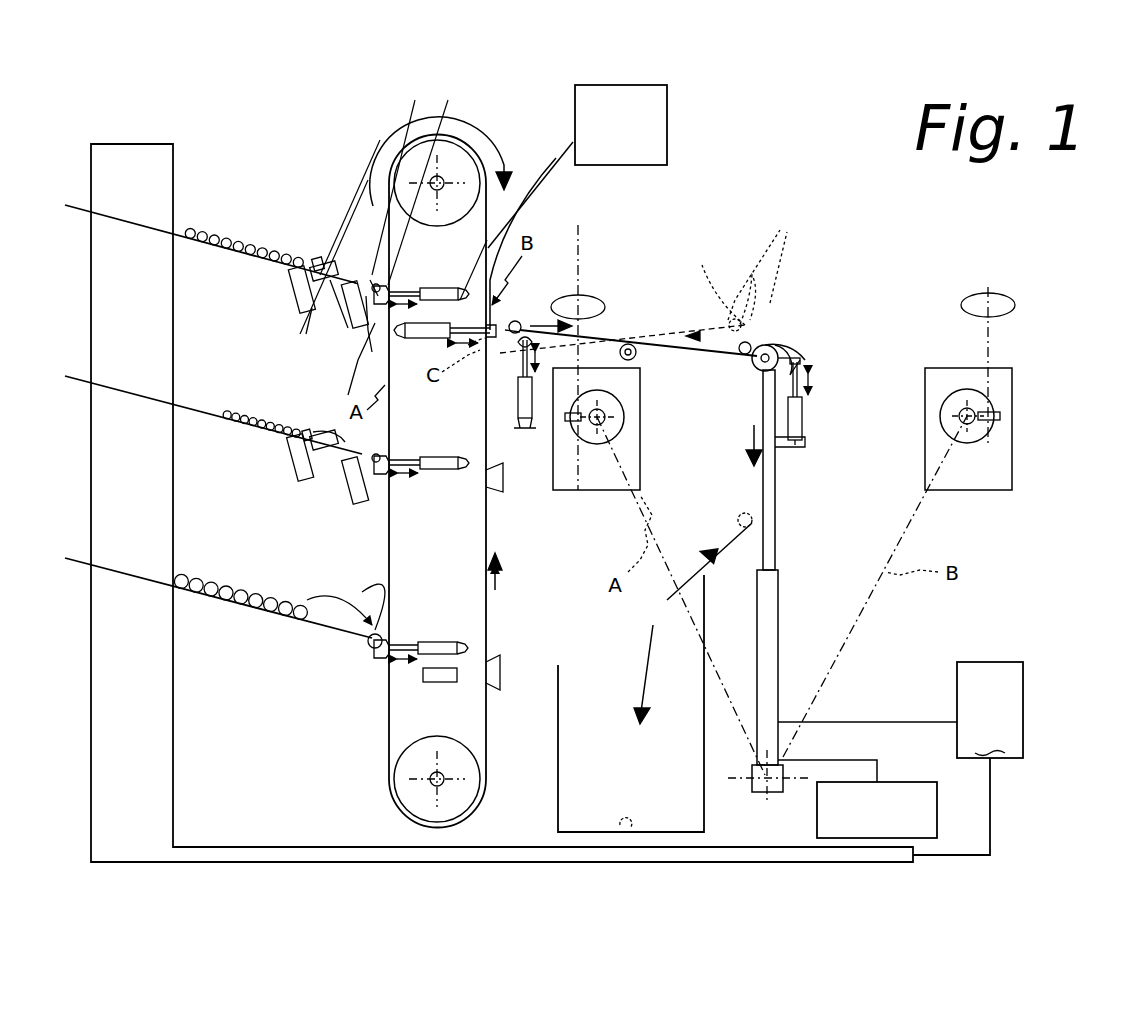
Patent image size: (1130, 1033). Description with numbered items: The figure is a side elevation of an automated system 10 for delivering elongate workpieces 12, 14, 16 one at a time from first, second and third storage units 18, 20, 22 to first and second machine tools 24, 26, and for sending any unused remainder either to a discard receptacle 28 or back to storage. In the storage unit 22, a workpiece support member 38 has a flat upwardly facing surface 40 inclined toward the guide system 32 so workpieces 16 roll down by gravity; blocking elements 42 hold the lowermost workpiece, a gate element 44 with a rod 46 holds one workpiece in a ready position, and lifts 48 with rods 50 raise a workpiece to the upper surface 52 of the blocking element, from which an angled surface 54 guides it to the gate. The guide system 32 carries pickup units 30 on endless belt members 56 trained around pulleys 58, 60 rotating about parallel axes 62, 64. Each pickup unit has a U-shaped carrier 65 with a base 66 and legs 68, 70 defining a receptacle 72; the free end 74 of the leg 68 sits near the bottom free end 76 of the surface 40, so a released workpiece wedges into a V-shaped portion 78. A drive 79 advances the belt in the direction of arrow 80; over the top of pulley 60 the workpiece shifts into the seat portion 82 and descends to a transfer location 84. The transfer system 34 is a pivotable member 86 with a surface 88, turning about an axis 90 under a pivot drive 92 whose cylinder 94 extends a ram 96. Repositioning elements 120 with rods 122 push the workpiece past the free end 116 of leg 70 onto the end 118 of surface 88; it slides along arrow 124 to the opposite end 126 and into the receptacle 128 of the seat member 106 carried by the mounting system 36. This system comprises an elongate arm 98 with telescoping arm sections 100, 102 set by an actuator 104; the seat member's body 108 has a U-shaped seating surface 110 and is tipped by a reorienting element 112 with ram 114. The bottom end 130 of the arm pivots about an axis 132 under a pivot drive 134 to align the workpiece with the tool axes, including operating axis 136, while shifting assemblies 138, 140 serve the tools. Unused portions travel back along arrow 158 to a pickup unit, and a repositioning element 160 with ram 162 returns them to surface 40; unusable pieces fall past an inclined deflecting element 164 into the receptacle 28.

The automated system for delivering elongate workpieces 10 is at (733, 160).
The elongate workpiece 12 is at (284, 600).
The elongate workpiece 14 is at (283, 418).
The elongate workpiece 16 is at (275, 250).
The first storage unit 18 is at (245, 650).
The second storage unit 20 is at (245, 438).
The third storage unit 22 is at (245, 272).
The first machine tool 24 is at (645, 455).
The second machine tool 26 is at (955, 368).
The discard receptacle 28 is at (685, 838).
The pickup unit 30 is at (395, 280).
The guide system 32 is at (435, 832).
The transfer system 34 is at (632, 287).
The workpiece mounting system 36 is at (825, 405).
The workpiece support member 38 is at (337, 300).
The upwardly facing surface 40 is at (182, 234).
The blocking element 42 is at (322, 262).
The gate element 44 is at (352, 328).
The rod 46 is at (416, 95).
The lift 48 is at (300, 310).
The rod 50 is at (320, 195).
The upper surface 52 is at (352, 160).
The angled surface 54 is at (310, 334).
The endless belt member 56 is at (503, 195).
The pulley 58 is at (395, 778).
The pulley 60 is at (490, 130).
The pulley axis 62 is at (445, 782).
The pulley axis 64 is at (440, 182).
The carrier 65 is at (535, 205).
The base 66 is at (388, 286).
The leg 68 is at (374, 312).
The leg 70 is at (380, 282).
The receptacle 72 is at (362, 350).
The free end 74 is at (380, 478).
The bottom free end 76 is at (436, 110).
The V-shaped portion 78 is at (380, 455).
The drive 79 is at (608, 157).
The arrow 80 is at (505, 145).
The V-shaped seat portion 82 is at (522, 320).
The transfer location 84 is at (540, 326).
The pivotable member 86 is at (705, 265).
The upwardly facing surface 88 is at (630, 345).
The axis 90 is at (636, 357).
The pivot drive 92 is at (518, 400).
The cylinder 94 is at (518, 378).
The extendable ram 96 is at (515, 352).
The elongate arm 98 is at (782, 637).
The arm section 100 is at (778, 518).
The arm section 102 is at (780, 605).
The actuator 104 is at (862, 839).
The seat member 106 is at (760, 372).
The body 108 is at (790, 358).
The seating surface 110 is at (790, 300).
The reorienting element 112 is at (805, 445).
The ram 114 is at (805, 410).
The free end 116 is at (505, 480).
The free end 118 is at (465, 342).
The repositioning element 120 is at (428, 328).
The extendable rod 122 is at (440, 288).
The arrow 124 is at (590, 298).
The opposite end 126 is at (770, 330).
The receptacle 128 is at (800, 320).
The bottom end 130 is at (755, 745).
The axis 132 is at (770, 790).
The pivot drive 134 is at (592, 430).
The operating axis 136 is at (965, 416).
The shifting assembly 138 is at (568, 420).
The shifting assembly 140 is at (1000, 412).
The arrow 158 is at (700, 330).
The repositioning element 160 is at (435, 286).
The ram 162 is at (436, 270).
The inclined deflecting element 164 is at (692, 560).